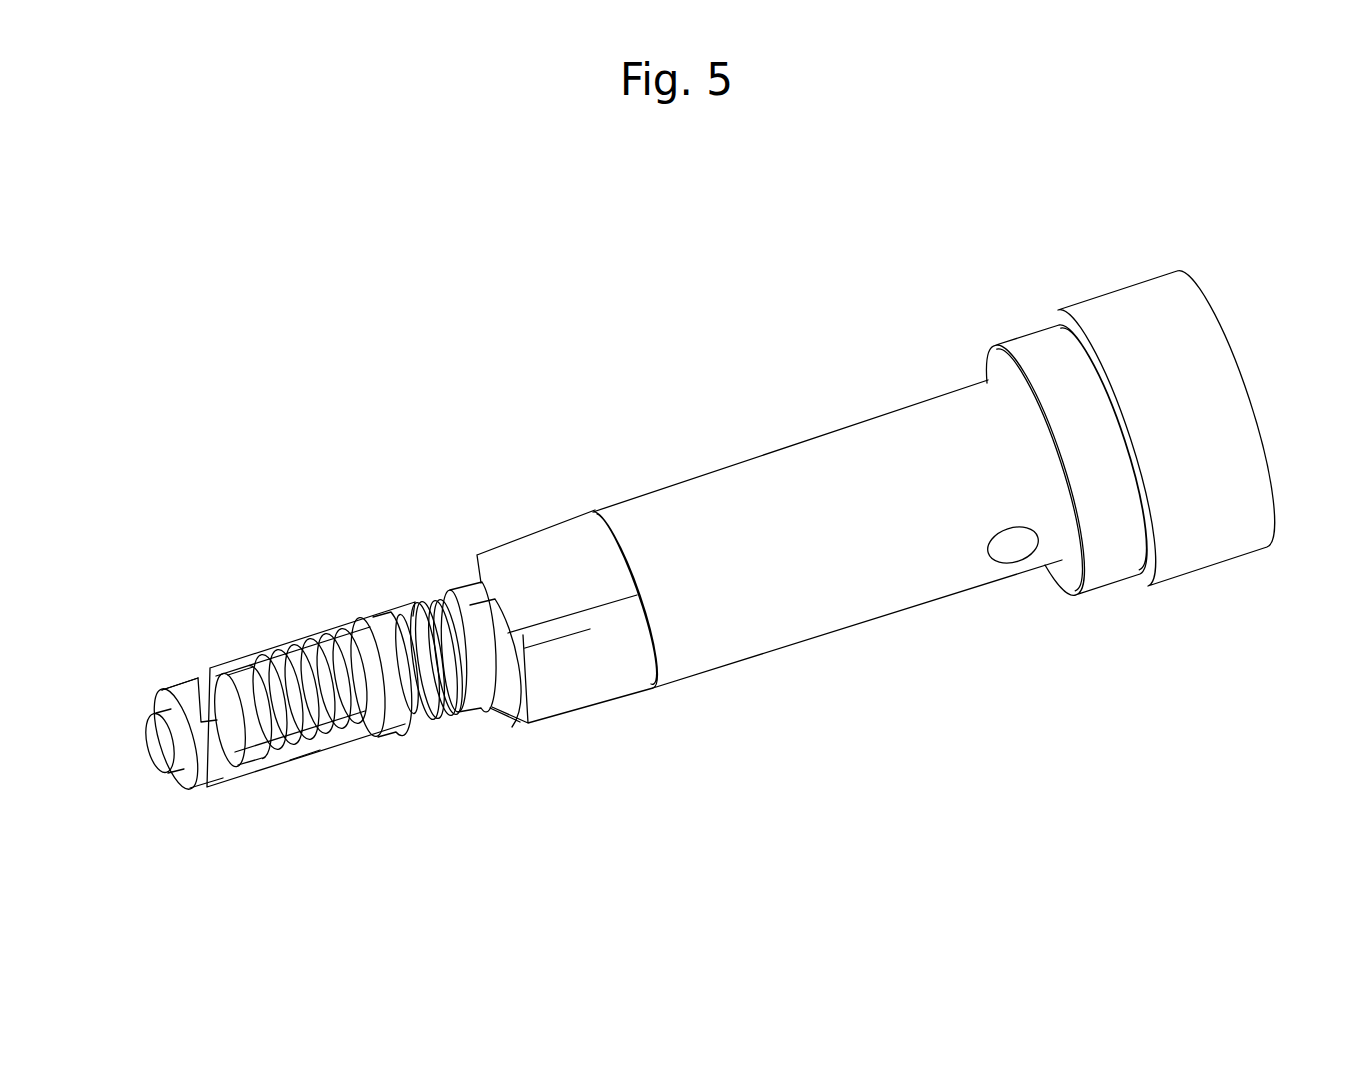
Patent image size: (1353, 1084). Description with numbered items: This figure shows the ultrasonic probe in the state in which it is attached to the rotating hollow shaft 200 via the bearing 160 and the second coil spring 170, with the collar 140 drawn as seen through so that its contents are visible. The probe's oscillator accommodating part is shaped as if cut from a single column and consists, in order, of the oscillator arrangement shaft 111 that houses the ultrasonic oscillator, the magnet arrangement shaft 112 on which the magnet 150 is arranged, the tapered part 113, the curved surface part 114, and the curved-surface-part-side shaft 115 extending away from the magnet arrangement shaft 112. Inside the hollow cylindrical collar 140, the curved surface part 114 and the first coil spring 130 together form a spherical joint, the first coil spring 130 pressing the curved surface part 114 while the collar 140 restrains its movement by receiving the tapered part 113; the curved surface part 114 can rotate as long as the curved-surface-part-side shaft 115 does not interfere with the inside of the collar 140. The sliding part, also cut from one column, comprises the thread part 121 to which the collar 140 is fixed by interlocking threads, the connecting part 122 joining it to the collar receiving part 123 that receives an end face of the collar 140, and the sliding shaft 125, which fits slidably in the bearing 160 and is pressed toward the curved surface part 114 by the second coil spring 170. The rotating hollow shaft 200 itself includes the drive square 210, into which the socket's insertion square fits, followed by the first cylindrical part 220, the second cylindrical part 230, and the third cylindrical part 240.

The oscillator arrangement shaft 111 is at (175, 745).
The magnet arrangement shaft 112 is at (205, 676).
The tapered part 113 is at (257, 752).
The curved surface part 114 is at (250, 678).
The curved-surface-part-side shaft 115 is at (303, 750).
The thread part 121 is at (371, 735).
The connecting part 122 is at (398, 735).
The collar receiving part 123 is at (418, 722).
The sliding shaft 125 is at (430, 618).
The first coil spring 130 is at (337, 735).
The collar 140 is at (342, 640).
The magnet 150 is at (168, 676).
The bearing 160 is at (467, 590).
The second coil spring 170 is at (470, 710).
The rotating hollow shaft 200 is at (895, 565).
The drive square 210 is at (618, 685).
The first cylindrical part 220 is at (858, 603).
The second cylindrical part 230 is at (1097, 562).
The third cylindrical part 240 is at (1200, 568).